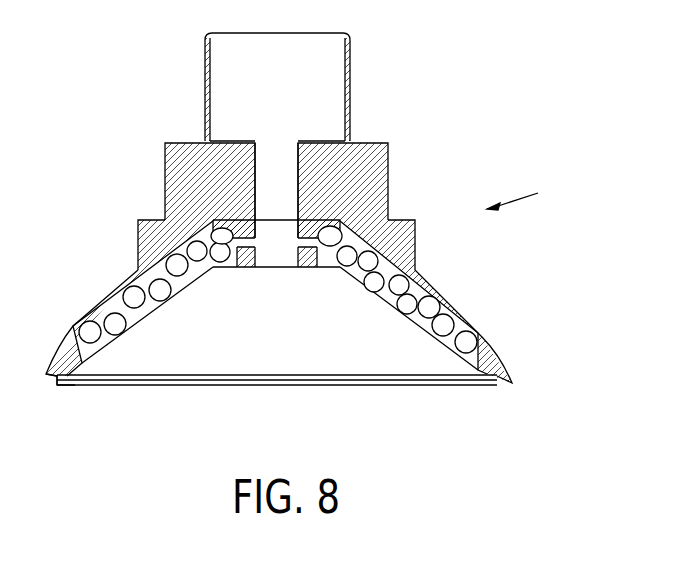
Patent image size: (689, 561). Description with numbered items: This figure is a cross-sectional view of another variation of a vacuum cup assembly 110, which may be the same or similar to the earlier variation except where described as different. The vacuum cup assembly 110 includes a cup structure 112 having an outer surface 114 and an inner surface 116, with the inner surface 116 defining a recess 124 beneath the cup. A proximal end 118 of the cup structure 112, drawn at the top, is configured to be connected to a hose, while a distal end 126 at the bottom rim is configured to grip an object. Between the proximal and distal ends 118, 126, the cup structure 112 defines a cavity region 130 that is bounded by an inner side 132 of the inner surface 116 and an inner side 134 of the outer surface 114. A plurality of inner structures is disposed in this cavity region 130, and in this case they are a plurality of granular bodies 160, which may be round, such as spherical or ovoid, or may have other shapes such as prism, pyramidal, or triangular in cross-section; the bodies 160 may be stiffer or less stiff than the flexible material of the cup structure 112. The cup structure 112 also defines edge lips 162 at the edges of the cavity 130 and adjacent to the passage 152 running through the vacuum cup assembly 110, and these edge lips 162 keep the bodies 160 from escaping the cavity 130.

The vacuum cup assembly 110 is at (530, 195).
The cup structure 112 is at (368, 177).
The outer surface 114 is at (440, 297).
The inner surface 116 is at (402, 346).
The proximal end 118 is at (353, 40).
The recess 124 is at (197, 348).
The distal end 126 is at (77, 388).
The cavity region 130 is at (135, 285).
The inner side of the inner surface 132 is at (146, 222).
The inner side of the outer surface 134 is at (200, 265).
The passage 152 is at (267, 247).
The granular bodies 160 is at (222, 228).
The edge lips 162 is at (245, 228).